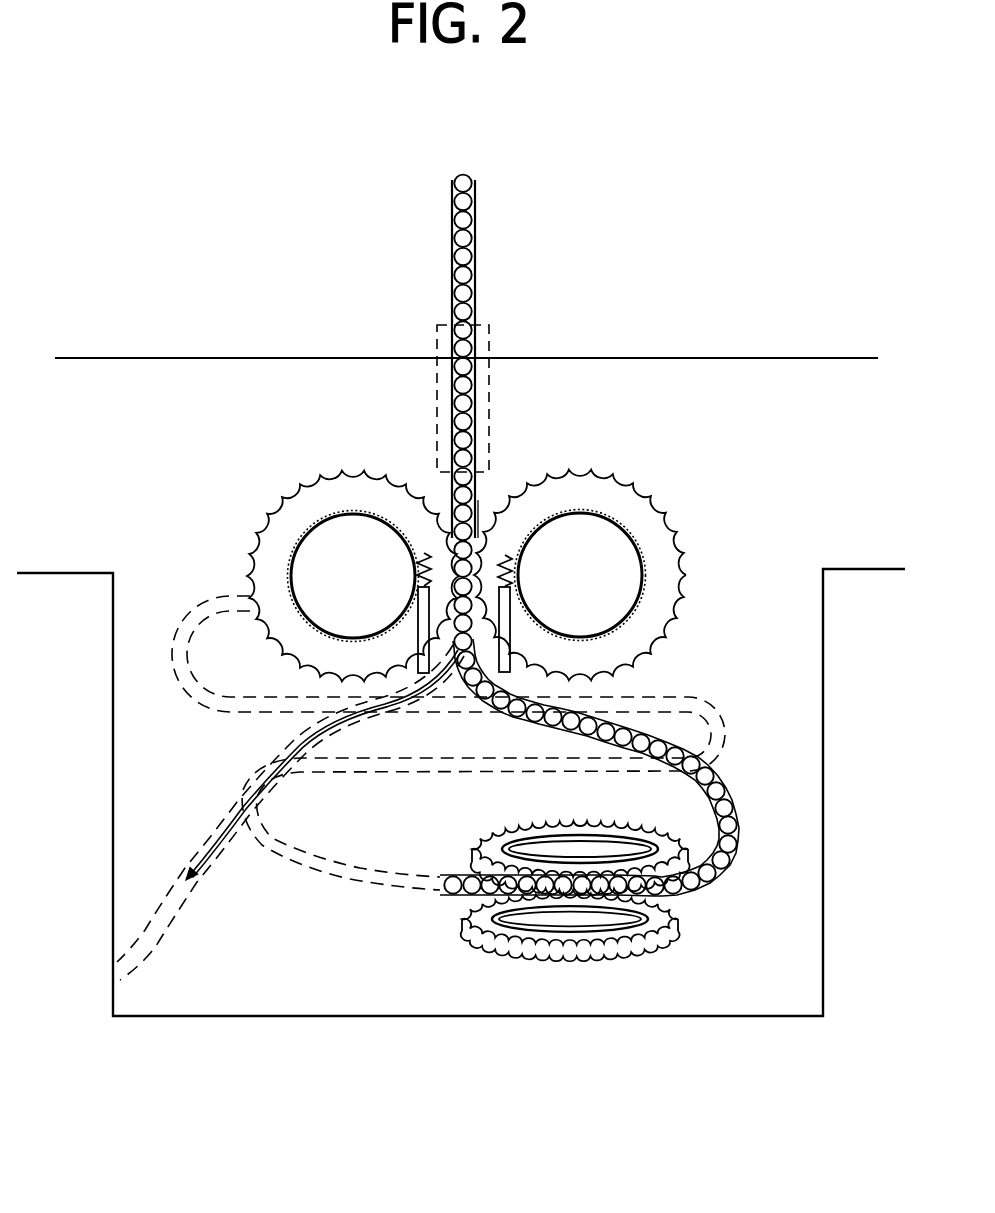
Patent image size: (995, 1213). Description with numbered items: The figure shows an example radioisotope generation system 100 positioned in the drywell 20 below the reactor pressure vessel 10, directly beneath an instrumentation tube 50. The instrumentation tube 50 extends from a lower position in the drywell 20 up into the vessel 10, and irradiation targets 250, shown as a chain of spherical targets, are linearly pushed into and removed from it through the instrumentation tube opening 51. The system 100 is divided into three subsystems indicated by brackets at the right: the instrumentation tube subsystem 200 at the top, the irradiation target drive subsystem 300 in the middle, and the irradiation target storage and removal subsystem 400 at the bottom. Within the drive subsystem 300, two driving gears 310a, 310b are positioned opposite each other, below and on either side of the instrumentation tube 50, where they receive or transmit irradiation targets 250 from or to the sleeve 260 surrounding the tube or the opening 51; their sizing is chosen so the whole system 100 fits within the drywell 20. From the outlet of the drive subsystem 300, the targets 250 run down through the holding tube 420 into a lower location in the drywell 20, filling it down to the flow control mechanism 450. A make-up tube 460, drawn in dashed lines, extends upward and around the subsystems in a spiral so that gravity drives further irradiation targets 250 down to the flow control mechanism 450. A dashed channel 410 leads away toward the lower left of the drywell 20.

The reactor pressure vessel 10 is at (783, 358).
The drywell 20 is at (823, 913).
The instrumentation tube 50 is at (477, 403).
The instrumentation tube opening 51 is at (477, 463).
The radioisotope generation system 100 is at (667, 1077).
The instrumentation tube subsystem 200 is at (745, 177).
The irradiation targets 250 is at (475, 293).
The sleeve 260 is at (452, 423).
The irradiation target drive subsystem 300 is at (745, 468).
The driving gear 310a is at (610, 480).
The driving gear 310b is at (277, 528).
The irradiation target storage and removal subsystem 400 is at (748, 690).
The discharge chute 410 is at (165, 930).
The holding tube 420 is at (680, 882).
The flow control mechanism 450 is at (703, 928).
The make-up tube 460 is at (243, 703).